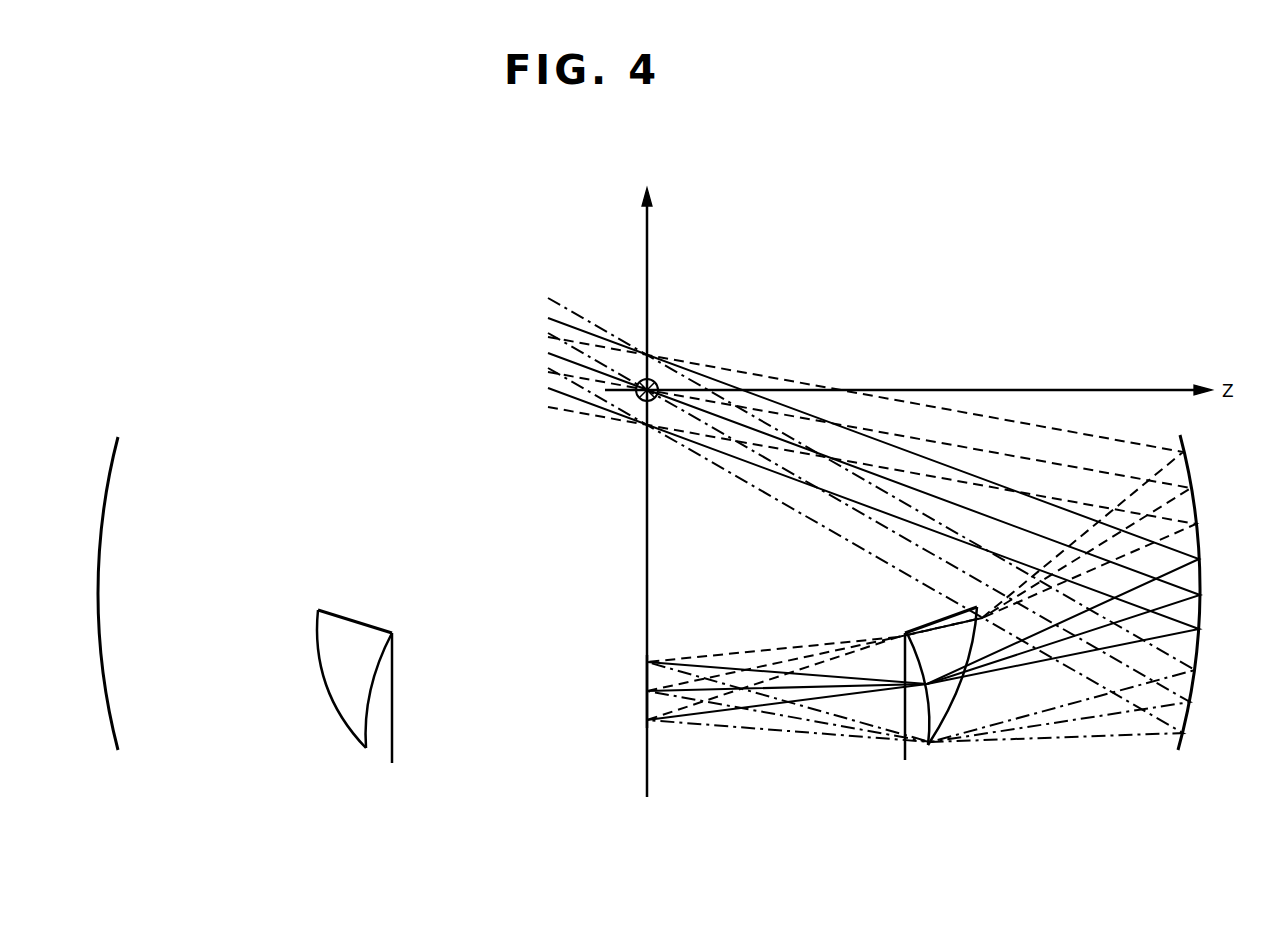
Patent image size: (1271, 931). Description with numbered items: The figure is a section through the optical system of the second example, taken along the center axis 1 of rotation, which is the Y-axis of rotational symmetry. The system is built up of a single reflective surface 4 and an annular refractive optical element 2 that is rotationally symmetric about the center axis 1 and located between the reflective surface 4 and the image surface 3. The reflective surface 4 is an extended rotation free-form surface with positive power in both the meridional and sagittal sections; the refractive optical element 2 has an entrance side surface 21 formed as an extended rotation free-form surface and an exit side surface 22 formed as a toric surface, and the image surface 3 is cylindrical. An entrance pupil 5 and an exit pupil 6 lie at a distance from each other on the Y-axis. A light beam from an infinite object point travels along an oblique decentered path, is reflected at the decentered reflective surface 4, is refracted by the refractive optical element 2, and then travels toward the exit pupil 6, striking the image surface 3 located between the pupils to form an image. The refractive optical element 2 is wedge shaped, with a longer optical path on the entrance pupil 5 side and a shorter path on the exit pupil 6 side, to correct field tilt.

The center axis of rotation 1 is at (648, 286).
The annular refractive optical element 2 is at (647, 728).
The image surface 3 is at (908, 752).
The reflective surface 4 is at (1190, 470).
The entrance pupil 5 is at (633, 410).
The exit pupil 6 is at (630, 722).
The entrance side surface 21 is at (958, 699).
The exit side surface 22 is at (924, 735).